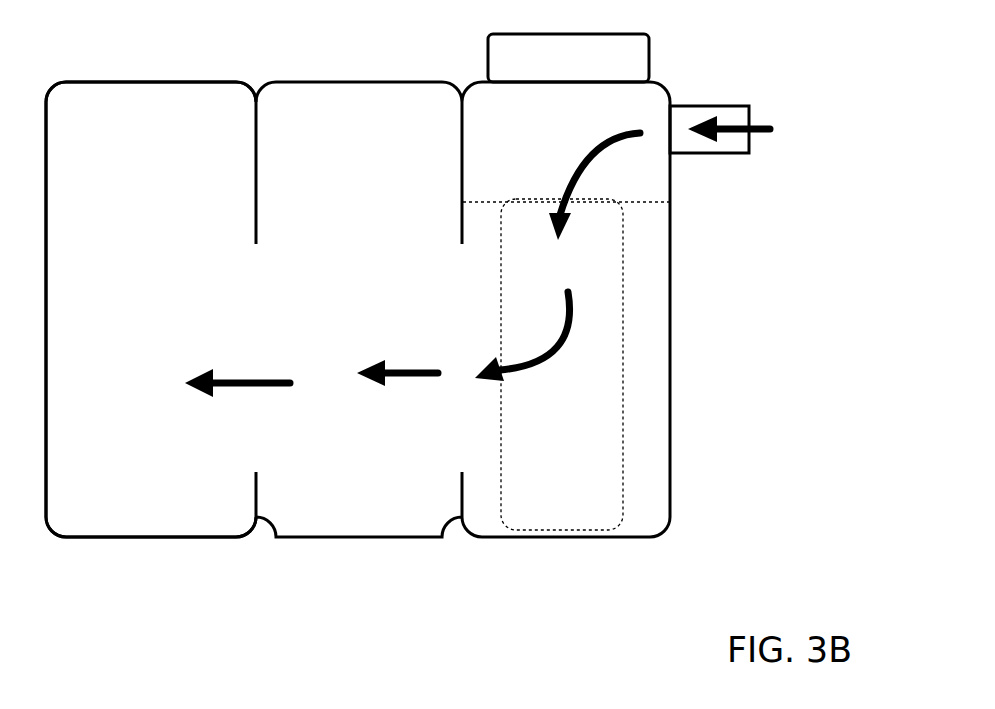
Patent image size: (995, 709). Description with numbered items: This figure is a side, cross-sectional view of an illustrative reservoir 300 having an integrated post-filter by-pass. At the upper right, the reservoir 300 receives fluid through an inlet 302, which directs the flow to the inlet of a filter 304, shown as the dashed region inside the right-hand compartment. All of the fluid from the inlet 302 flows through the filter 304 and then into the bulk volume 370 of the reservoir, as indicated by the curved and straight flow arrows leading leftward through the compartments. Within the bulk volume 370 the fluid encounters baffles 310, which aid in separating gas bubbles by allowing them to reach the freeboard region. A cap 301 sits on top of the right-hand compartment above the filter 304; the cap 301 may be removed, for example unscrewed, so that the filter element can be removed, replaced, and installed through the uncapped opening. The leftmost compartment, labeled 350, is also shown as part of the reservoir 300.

The reservoir 300 is at (380, 44).
The cap 301 is at (640, 33).
The inlet 302 is at (717, 153).
The filter 304 is at (620, 395).
The baffles 310 is at (253, 490).
The left compartment 350 is at (195, 115).
The bulk volume 370 is at (147, 267).